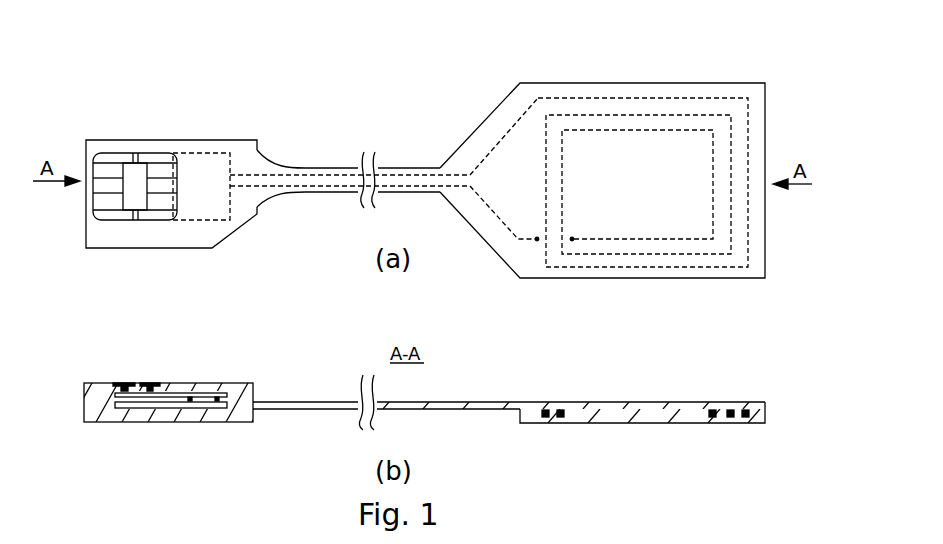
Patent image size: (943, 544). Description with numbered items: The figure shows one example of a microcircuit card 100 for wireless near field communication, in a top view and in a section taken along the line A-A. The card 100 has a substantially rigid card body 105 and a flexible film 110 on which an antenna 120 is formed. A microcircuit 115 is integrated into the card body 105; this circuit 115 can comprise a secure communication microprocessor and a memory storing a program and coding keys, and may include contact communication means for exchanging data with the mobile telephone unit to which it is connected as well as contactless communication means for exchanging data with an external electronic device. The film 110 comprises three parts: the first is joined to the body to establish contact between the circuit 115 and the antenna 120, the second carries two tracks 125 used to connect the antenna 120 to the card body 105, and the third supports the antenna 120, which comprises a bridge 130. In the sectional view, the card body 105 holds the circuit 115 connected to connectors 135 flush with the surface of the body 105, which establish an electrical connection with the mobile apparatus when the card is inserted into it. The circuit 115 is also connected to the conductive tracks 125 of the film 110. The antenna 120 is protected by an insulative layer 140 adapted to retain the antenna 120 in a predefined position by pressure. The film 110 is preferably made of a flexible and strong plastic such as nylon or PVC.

The card 100 is at (134, 61).
The card body 105 is at (212, 140).
The flexible film 110 is at (336, 167).
The microcircuit 115 is at (205, 222).
The antenna 120 is at (585, 97).
The tracks 125 is at (315, 193).
The bridge 130 is at (553, 242).
The connectors 135 is at (140, 383).
The insulative layer 140 is at (617, 424).